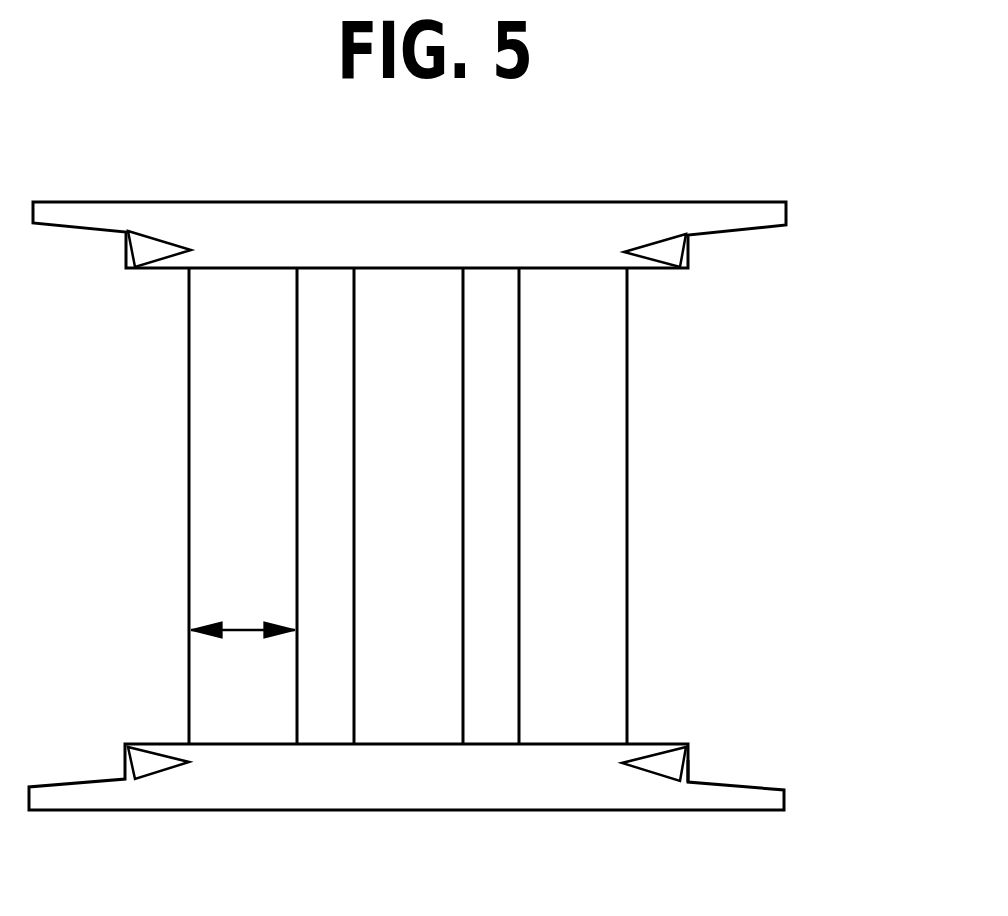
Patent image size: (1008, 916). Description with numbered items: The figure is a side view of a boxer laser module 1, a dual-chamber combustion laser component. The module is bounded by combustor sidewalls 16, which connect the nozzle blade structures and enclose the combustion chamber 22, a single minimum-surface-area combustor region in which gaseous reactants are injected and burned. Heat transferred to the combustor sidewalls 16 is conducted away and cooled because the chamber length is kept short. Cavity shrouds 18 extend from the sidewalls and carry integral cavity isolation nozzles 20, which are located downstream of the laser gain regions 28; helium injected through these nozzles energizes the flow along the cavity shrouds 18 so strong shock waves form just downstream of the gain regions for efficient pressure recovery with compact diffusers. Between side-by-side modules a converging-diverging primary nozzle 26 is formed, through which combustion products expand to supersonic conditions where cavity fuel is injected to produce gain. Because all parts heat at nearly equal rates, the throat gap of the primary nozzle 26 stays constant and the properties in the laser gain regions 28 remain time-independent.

The boxer laser module 1 is at (462, 515).
The combustor sidewall 16 is at (573, 203).
The cavity shroud 18 is at (652, 742).
The cavity isolation nozzle 20 is at (690, 758).
The combustion chamber 22 is at (447, 330).
The primary nozzle 26 is at (498, 378).
The laser gain region 28 is at (212, 485).